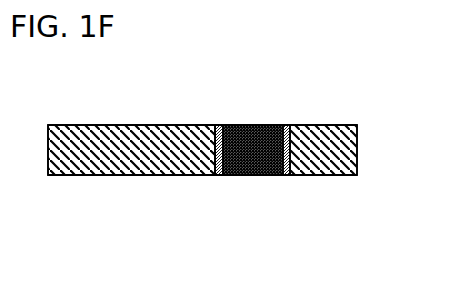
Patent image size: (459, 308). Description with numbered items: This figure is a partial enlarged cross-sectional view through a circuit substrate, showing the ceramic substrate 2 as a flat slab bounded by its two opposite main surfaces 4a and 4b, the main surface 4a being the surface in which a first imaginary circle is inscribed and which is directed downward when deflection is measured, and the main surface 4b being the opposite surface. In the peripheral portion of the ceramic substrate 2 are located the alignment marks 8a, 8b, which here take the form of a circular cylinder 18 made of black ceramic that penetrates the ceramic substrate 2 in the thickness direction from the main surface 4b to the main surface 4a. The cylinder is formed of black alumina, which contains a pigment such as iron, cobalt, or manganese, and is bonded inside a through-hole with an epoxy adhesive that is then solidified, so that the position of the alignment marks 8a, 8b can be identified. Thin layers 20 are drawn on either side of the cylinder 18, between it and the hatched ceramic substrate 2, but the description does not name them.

The ceramic substrate 2 is at (80, 132).
The main surface 4a is at (165, 176).
The main surface 4b is at (167, 125).
The alignment mark 8a is at (246, 125).
The alignment mark 8b is at (252, 150).
The circular cylinder 18 is at (257, 175).
The insulating layer 20 is at (218, 125).